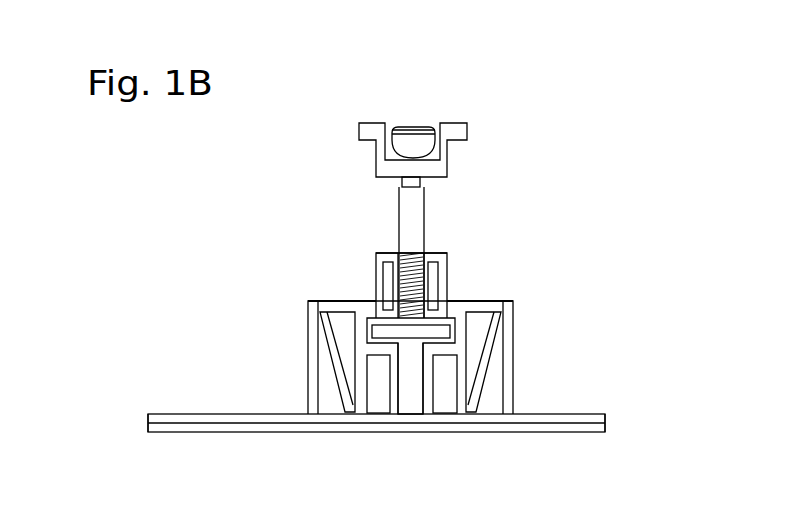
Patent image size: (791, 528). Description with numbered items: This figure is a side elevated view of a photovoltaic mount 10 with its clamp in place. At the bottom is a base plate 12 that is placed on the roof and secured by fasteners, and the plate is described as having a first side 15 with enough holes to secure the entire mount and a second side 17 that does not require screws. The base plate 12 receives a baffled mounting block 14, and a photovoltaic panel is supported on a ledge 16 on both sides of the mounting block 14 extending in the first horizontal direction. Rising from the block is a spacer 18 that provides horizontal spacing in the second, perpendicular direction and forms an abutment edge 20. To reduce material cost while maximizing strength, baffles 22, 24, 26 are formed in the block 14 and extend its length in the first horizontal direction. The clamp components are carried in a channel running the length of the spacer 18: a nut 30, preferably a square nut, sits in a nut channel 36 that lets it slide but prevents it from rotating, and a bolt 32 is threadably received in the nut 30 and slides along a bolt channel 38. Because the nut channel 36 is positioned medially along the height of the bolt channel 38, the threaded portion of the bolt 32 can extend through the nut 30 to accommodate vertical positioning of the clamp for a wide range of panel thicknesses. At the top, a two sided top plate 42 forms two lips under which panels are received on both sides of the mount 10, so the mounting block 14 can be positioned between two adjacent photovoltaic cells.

The photovoltaic mount 10 is at (274, 126).
The base plate 12 is at (218, 413).
The mounting block 14 is at (307, 319).
The first side 15 is at (163, 413).
The ledge 16 is at (338, 300).
The second side 17 is at (593, 413).
The spacer 18 is at (363, 261).
The abutment edge 20 is at (447, 278).
The baffle 22 is at (343, 404).
The baffle 24 is at (367, 403).
The baffle 26 is at (400, 403).
The nut 30 is at (447, 332).
The bolt 32 is at (423, 213).
The nut channel 36 is at (362, 338).
The bolt channel 38 is at (412, 373).
The two sided top plate 42 is at (448, 122).